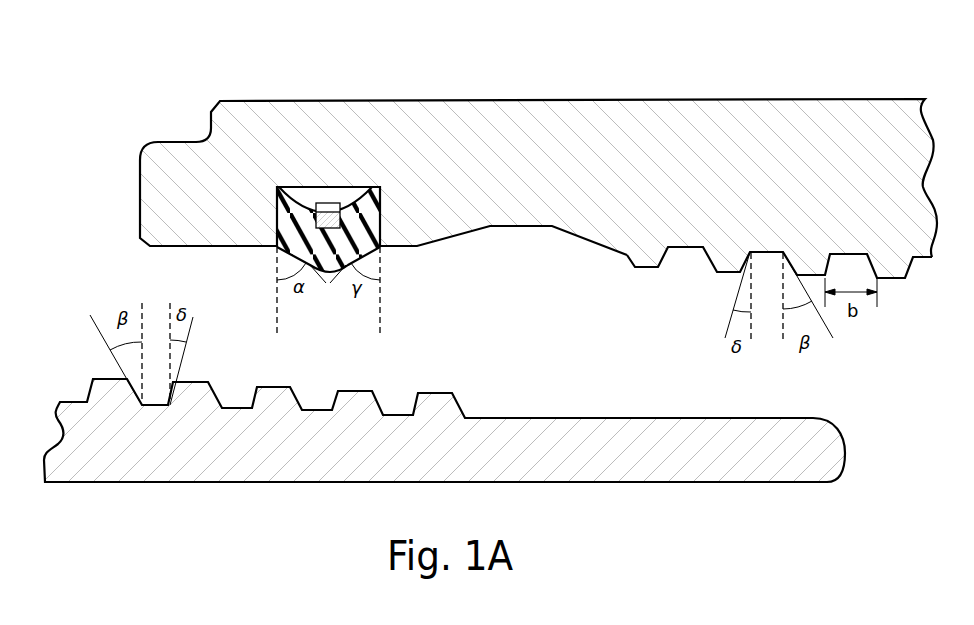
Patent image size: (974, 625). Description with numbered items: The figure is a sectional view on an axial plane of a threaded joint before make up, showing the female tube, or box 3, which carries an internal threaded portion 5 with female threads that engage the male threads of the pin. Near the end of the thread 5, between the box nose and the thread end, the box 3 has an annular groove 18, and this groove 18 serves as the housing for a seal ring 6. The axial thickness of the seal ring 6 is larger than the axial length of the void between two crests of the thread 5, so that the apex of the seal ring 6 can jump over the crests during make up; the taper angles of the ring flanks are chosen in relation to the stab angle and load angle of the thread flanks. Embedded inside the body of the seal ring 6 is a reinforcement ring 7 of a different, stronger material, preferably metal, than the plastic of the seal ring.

The box 3 is at (572, 131).
The internal threaded portion 5 is at (653, 243).
The seal ring 6 is at (353, 240).
The reinforcement ring 7 is at (312, 218).
The annular groove 18 is at (340, 187).